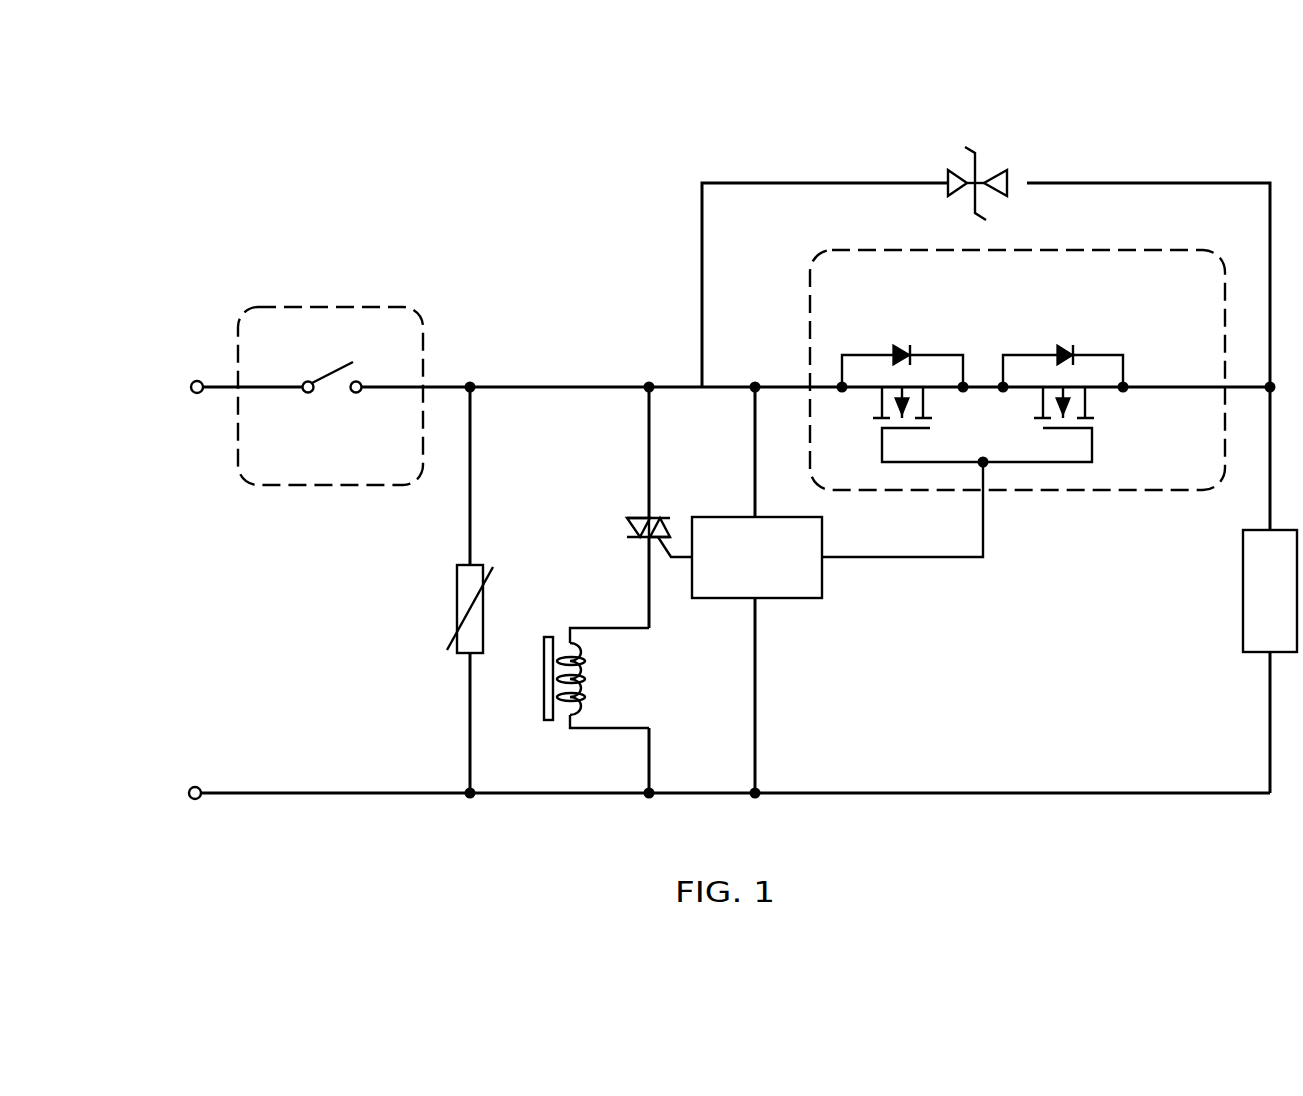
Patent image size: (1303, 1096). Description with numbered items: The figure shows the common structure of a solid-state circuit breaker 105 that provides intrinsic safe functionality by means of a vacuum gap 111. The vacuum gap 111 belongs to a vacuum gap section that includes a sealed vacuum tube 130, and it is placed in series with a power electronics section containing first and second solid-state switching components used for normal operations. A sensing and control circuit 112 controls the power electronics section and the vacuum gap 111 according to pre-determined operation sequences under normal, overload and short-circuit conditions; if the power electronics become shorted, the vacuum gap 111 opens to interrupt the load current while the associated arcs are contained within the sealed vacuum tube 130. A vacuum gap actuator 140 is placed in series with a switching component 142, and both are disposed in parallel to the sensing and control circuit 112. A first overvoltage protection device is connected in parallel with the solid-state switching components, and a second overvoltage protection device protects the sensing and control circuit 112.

The solid-state circuit breaker 105 is at (285, 125).
The sealed vacuum tube 130 is at (423, 340).
The vacuum gap 111 is at (330, 394).
The switching component 142 is at (629, 524).
The sensing and control circuit 112 is at (787, 598).
The vacuum gap actuator 140 is at (607, 622).